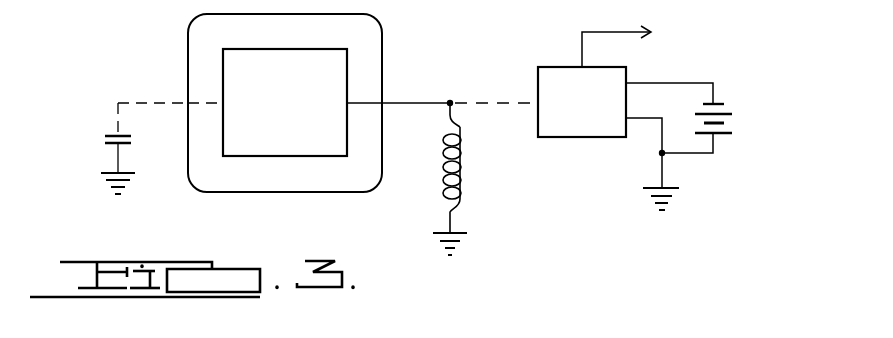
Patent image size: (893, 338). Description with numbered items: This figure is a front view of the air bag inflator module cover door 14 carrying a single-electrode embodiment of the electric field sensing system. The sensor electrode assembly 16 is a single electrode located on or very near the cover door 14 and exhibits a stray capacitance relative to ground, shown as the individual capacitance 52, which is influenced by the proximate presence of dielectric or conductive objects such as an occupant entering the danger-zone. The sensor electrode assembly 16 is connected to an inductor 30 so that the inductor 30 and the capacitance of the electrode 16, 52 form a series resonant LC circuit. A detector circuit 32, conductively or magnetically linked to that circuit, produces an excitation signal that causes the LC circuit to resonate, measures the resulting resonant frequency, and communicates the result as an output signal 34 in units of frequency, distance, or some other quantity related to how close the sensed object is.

The air bag inflator module cover door 14 is at (382, 43).
The sensor electrode assembly 16 is at (291, 112).
The inductor 30 is at (461, 174).
The detector circuit 32 is at (592, 115).
The output signal 34 is at (636, 44).
The individual capacitance 52 is at (107, 139).